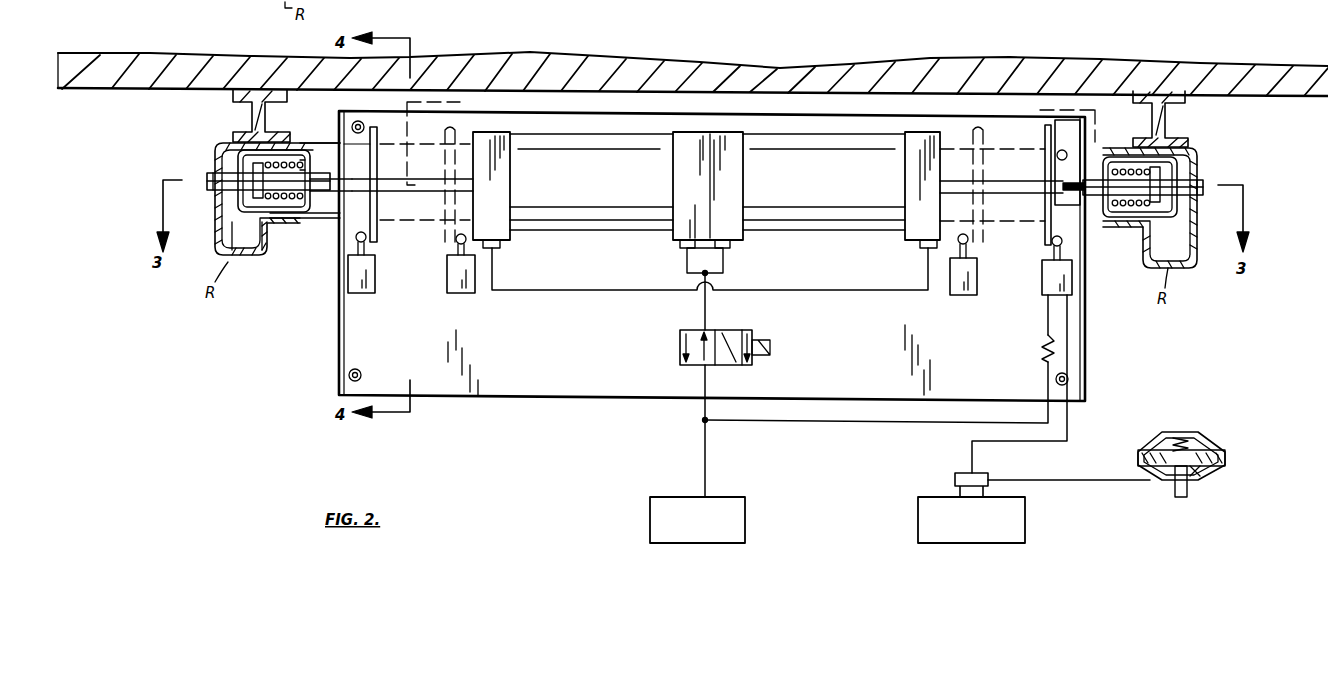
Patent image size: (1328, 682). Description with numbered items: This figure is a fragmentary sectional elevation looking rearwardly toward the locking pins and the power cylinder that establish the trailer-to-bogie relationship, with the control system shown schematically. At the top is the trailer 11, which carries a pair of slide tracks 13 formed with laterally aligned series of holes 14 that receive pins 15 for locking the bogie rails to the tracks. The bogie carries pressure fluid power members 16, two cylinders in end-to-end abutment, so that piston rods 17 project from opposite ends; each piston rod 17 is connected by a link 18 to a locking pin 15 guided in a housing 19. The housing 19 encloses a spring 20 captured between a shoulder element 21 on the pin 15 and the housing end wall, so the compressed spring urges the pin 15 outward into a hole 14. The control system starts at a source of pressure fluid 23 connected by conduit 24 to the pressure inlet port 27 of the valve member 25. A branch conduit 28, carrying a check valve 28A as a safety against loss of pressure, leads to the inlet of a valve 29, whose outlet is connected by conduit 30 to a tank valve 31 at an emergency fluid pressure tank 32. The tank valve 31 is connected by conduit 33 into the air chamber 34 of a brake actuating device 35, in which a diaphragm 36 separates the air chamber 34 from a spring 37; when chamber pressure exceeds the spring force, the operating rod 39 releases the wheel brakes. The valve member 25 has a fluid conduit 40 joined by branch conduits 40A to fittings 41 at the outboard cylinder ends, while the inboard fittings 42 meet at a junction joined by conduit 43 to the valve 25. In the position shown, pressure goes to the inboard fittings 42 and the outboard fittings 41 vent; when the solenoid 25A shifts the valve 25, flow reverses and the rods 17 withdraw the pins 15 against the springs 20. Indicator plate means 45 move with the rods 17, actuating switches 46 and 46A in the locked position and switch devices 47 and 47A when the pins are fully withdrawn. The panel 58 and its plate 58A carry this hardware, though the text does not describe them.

The trailer 11 is at (1240, 52).
The slide tracks 13 is at (232, 141).
The holes 14 is at (1208, 184).
The locking pin 15 is at (207, 178).
The pressure fluid power members 16 is at (590, 224).
The piston rod 17 is at (418, 170).
The link 18 is at (1087, 194).
The housing 19 is at (278, 212).
The spring 20 is at (295, 152).
The shoulder element 21 is at (236, 208).
The source of pressure fluid 23 is at (748, 514).
The conduit 24 is at (703, 452).
The valve member 25 is at (680, 340).
The solenoid 25A is at (770, 348).
The pressure inlet port 27 is at (700, 368).
The branch conduit 28 is at (840, 422).
The check valve 28A is at (1042, 350).
The valve 29 is at (1042, 296).
The conduit 30 is at (1068, 438).
The tank valve 31 is at (957, 474).
The emergency fluid pressure tank 32 is at (1026, 527).
The conduit 33 is at (1063, 480).
The air chamber 34 is at (1198, 476).
The brake actuating device 35 is at (1200, 426).
The diaphragm 36 is at (1200, 438).
The spring 37 is at (1180, 436).
The operating rod 39 is at (1175, 494).
The fluid conduit 40 is at (703, 300).
The branch conduits 40A is at (600, 291).
The fittings 41 is at (500, 249).
The fittings 42 is at (680, 250).
The conduit 43 is at (708, 312).
The indicator plate means 45 is at (378, 240).
The switch 46 is at (366, 293).
The switch 46A is at (1065, 122).
The switch device 47 is at (462, 293).
The switch device 47A is at (960, 296).
The panel 58 is at (488, 400).
The panel bracket plate 58A is at (327, 219).